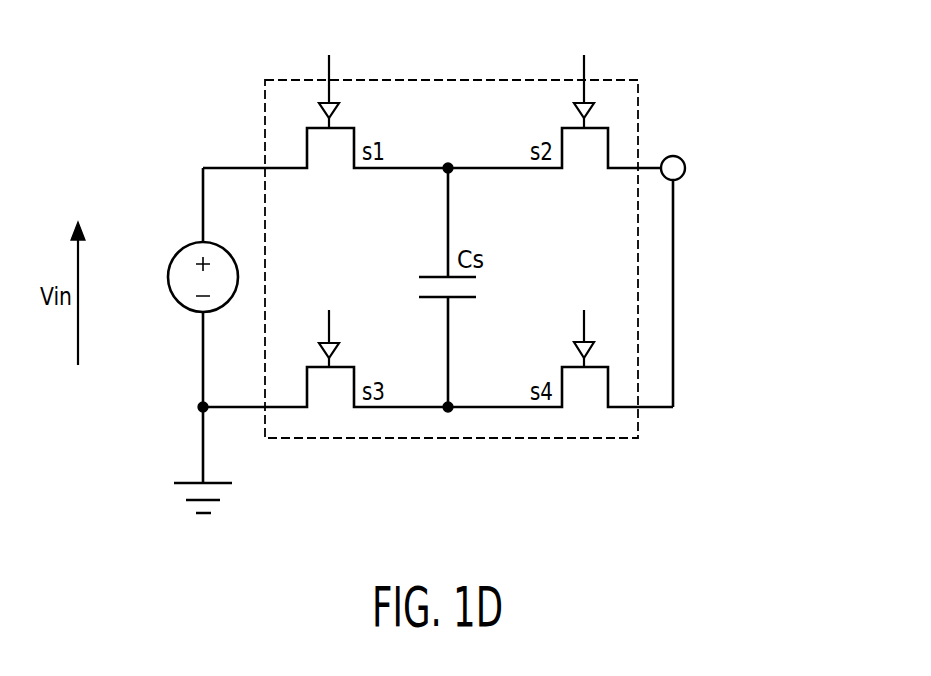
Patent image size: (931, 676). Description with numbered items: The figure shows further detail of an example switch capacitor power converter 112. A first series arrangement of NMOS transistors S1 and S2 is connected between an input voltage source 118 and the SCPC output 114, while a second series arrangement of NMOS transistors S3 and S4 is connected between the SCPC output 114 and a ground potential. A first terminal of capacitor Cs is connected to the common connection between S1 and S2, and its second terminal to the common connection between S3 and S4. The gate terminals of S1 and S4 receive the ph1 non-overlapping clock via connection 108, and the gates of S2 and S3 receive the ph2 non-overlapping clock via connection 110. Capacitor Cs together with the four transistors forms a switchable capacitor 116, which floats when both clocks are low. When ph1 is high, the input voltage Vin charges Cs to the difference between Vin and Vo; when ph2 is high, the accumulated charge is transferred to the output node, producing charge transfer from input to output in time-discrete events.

The connection 108 is at (327, 70).
The connection 110 is at (585, 70).
The switch capacitor power converter 112 is at (737, 268).
The SCPC output 114 is at (686, 165).
The switchable capacitor 116 is at (638, 95).
The input voltage source 118 is at (180, 252).